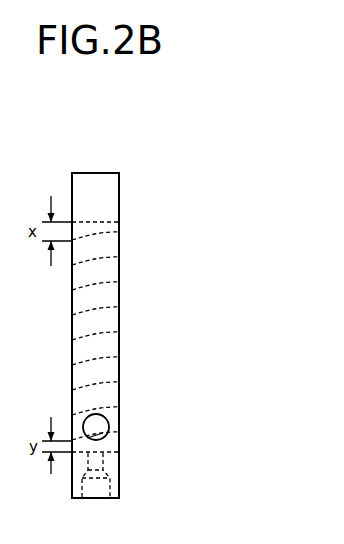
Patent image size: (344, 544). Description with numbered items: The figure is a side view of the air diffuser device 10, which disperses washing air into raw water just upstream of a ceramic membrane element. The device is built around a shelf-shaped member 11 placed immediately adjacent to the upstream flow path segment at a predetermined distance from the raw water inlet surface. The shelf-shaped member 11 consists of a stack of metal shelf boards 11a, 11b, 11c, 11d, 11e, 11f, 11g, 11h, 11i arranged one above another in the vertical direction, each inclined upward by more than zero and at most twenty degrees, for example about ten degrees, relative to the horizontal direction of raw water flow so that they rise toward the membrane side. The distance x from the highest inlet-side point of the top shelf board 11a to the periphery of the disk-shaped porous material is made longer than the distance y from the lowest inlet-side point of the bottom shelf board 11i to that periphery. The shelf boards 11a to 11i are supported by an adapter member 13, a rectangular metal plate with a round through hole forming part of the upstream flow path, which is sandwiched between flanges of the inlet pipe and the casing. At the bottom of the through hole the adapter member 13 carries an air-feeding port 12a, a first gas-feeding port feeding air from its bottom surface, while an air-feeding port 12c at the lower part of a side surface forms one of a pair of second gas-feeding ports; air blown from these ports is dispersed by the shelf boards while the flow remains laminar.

The air diffuser device 10 is at (111, 148).
The shelf-shaped member 11 is at (119, 222).
The shelf board 11a is at (119, 232).
The shelf board 11b is at (119, 257).
The shelf board 11c is at (119, 282).
The shelf board 11d is at (119, 307).
The shelf board 11e is at (119, 332).
The shelf board 11f is at (119, 357).
The shelf board 11g is at (119, 382).
The shelf board 11h is at (119, 407).
The shelf board 11i is at (119, 432).
The air-feeding port 12a is at (119, 487).
The air-feeding port 12c is at (103, 433).
The adapter member 13 is at (119, 462).